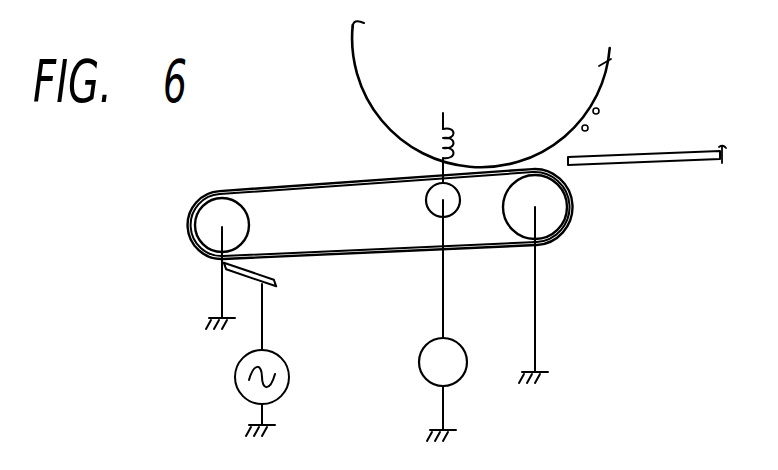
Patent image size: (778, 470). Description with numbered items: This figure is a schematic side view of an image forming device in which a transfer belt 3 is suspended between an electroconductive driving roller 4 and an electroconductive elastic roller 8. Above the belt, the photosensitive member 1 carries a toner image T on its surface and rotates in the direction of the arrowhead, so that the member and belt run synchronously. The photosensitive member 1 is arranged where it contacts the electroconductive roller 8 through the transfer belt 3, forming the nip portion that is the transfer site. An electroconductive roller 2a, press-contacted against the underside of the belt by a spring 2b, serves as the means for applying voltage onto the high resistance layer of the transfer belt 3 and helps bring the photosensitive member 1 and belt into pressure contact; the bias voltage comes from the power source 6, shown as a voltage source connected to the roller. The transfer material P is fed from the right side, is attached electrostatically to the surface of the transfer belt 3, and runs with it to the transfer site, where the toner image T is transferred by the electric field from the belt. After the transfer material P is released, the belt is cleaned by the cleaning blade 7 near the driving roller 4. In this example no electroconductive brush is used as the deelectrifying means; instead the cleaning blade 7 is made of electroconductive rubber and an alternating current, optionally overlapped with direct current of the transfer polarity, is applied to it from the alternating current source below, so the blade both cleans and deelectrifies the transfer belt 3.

The photosensitive member 1 is at (603, 65).
The electroconductive roller 2a is at (428, 204).
The spring 2b is at (456, 145).
The transfer belt 3 is at (352, 257).
The electroconductive driving roller 4 is at (249, 217).
The power source 6 is at (466, 372).
The cleaning blade 7 is at (273, 284).
The electroconductive roller 8 is at (556, 221).
The toner image T is at (600, 112).
The transfer material P is at (711, 149).